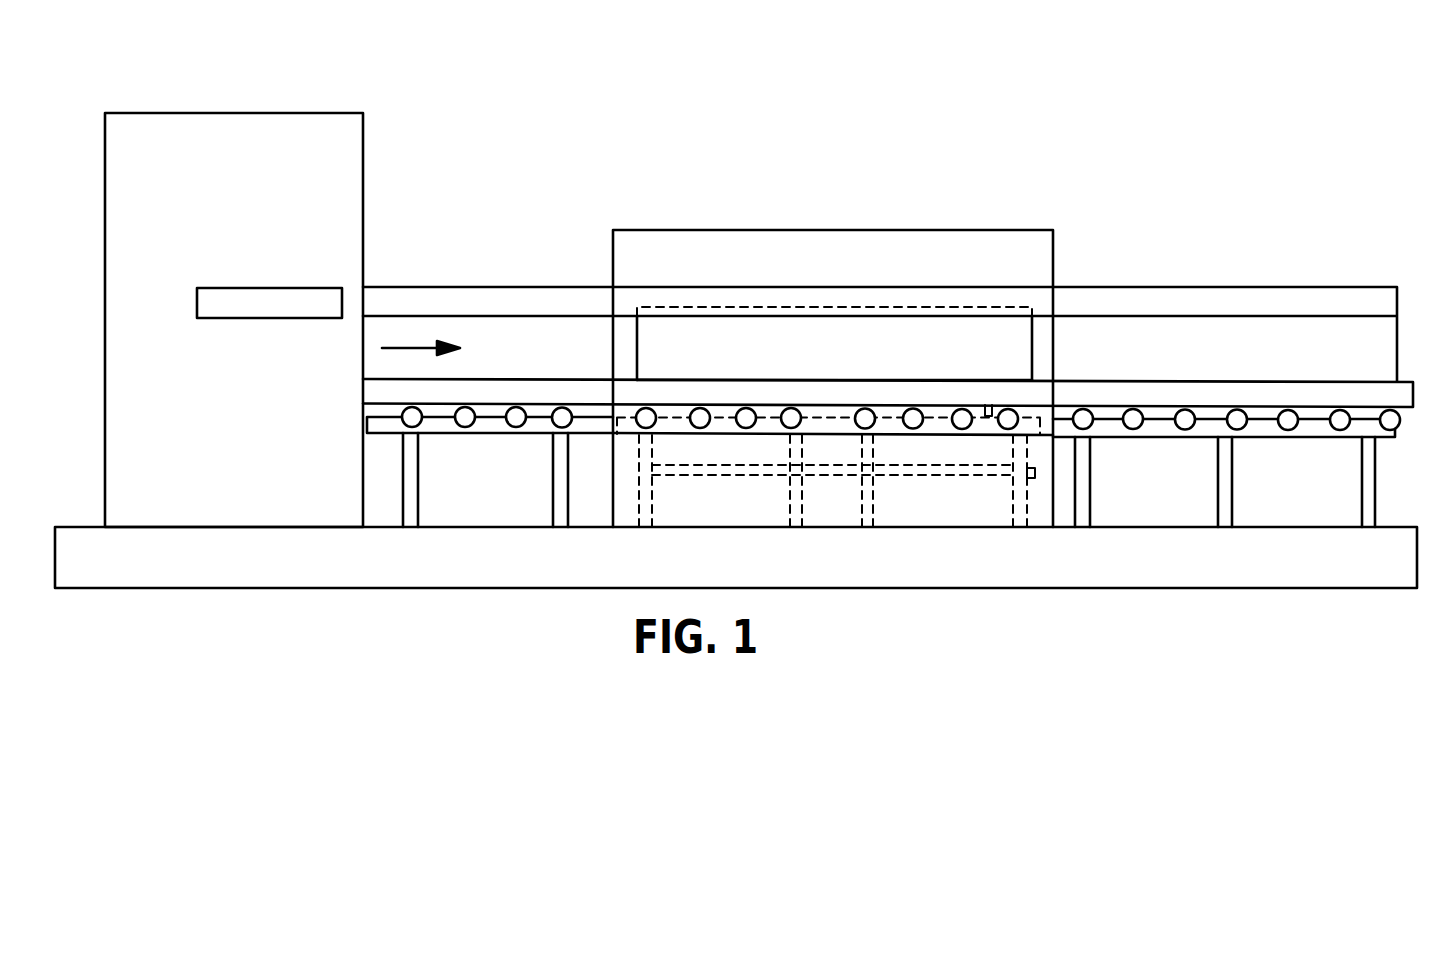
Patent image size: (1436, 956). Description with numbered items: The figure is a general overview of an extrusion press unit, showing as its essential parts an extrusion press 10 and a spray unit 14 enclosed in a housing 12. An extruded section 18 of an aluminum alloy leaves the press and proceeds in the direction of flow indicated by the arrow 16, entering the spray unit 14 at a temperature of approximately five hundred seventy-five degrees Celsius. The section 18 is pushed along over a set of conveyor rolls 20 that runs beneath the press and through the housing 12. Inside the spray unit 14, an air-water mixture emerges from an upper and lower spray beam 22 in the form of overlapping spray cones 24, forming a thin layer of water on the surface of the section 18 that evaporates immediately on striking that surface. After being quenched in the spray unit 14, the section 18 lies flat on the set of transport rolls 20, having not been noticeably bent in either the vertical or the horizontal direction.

The extrusion press 10 is at (328, 123).
The housing 12 is at (672, 230).
The spray unit 14 is at (725, 252).
The arrow 16 is at (422, 343).
The extruded section 18 is at (465, 378).
The set of conveyor rolls 20 is at (493, 425).
The upper and lower spray beam 22 is at (750, 307).
The spray cones 24 is at (860, 328).